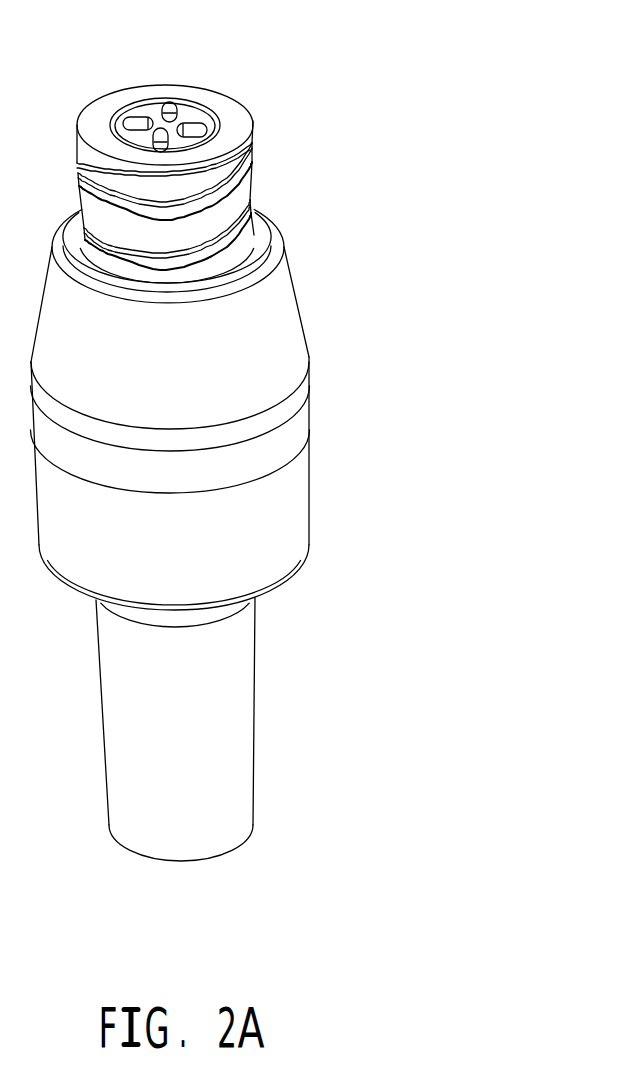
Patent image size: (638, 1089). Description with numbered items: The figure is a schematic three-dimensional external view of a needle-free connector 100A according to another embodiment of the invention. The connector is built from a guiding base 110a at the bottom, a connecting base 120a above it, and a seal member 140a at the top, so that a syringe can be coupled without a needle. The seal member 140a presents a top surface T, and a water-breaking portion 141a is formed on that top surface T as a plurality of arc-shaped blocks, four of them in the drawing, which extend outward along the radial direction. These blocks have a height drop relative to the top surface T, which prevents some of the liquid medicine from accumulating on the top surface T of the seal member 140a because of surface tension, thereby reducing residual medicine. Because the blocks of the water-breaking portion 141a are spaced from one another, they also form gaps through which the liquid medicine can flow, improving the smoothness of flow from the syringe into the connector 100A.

The needle-free connector 100A is at (459, 918).
The seal member 140a is at (192, 118).
The water-breaking portion 141a is at (172, 102).
The top surface T is at (171, 142).
The connecting base 120a is at (283, 298).
The guiding base 110a is at (293, 498).